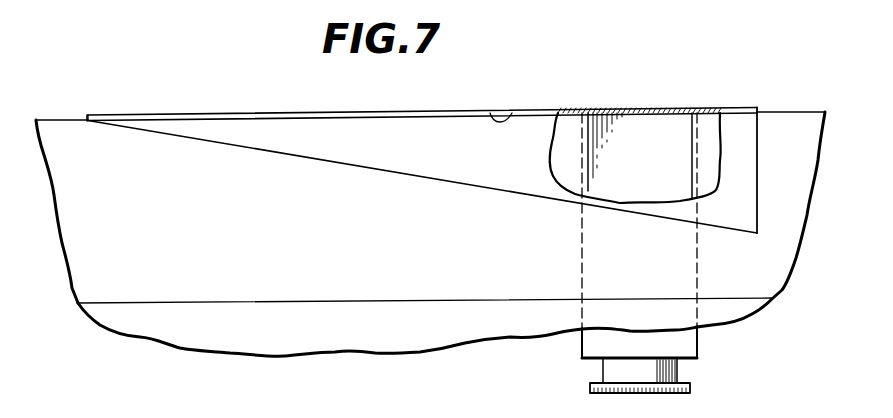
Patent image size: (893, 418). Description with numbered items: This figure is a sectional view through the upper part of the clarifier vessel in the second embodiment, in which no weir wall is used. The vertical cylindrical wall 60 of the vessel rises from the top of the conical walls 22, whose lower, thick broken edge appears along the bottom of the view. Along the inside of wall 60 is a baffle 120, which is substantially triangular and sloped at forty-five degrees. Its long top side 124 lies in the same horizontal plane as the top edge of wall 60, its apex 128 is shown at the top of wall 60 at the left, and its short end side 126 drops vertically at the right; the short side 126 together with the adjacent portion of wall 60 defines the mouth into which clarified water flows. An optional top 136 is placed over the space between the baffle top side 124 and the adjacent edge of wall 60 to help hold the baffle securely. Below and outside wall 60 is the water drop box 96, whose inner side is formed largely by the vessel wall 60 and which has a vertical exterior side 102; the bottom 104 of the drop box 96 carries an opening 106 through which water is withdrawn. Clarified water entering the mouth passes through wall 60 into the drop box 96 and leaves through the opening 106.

The walls 22 is at (245, 333).
The vertical cylindrical wall 60 is at (212, 228).
The water drop box 96 is at (568, 352).
The vertical exterior side 102 is at (683, 345).
The bottom 104 is at (672, 377).
The opening 106 is at (633, 387).
The baffle 120 is at (373, 178).
The long top side 124 is at (512, 113).
The short end side 126 is at (757, 128).
The apex 128 is at (88, 121).
The top 136 is at (262, 113).